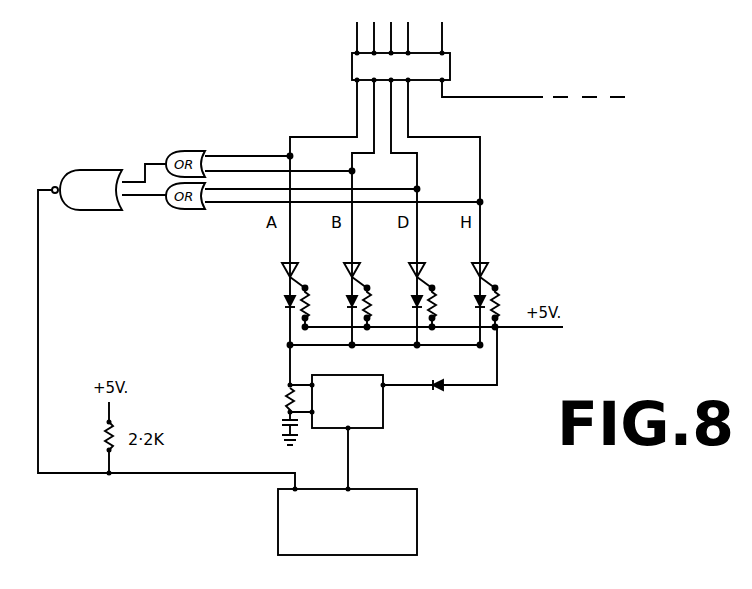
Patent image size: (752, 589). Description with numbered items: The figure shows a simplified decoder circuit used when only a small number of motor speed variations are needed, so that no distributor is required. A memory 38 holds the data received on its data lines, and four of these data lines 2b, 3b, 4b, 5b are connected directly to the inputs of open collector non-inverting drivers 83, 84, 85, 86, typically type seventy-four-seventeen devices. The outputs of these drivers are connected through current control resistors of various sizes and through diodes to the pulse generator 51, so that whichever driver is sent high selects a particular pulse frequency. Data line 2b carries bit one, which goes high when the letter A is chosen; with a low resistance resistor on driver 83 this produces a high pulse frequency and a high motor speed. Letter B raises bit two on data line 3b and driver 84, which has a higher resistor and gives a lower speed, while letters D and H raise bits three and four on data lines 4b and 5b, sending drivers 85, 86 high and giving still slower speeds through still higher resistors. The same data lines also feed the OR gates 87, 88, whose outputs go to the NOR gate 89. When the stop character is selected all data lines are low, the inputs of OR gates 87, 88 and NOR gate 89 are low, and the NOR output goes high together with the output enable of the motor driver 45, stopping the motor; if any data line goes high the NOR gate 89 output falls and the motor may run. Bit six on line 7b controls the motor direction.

The memory 38 is at (345, 70).
The data line 2b is at (352, 93).
The data line 3b is at (372, 132).
The data line 4b is at (397, 130).
The data line 5b is at (485, 160).
The line 7b is at (465, 91).
The OR gate 87 is at (201, 144).
The OR gate 88 is at (201, 216).
The NOR gate 89 is at (85, 163).
The open collector non-inverting driver 83 is at (280, 275).
The open collector non-inverting driver 84 is at (342, 275).
The open collector non-inverting driver 85 is at (407, 275).
The open collector non-inverting driver 86 is at (472, 275).
The pulse generator 51 is at (388, 413).
The motor driver 45 is at (421, 518).